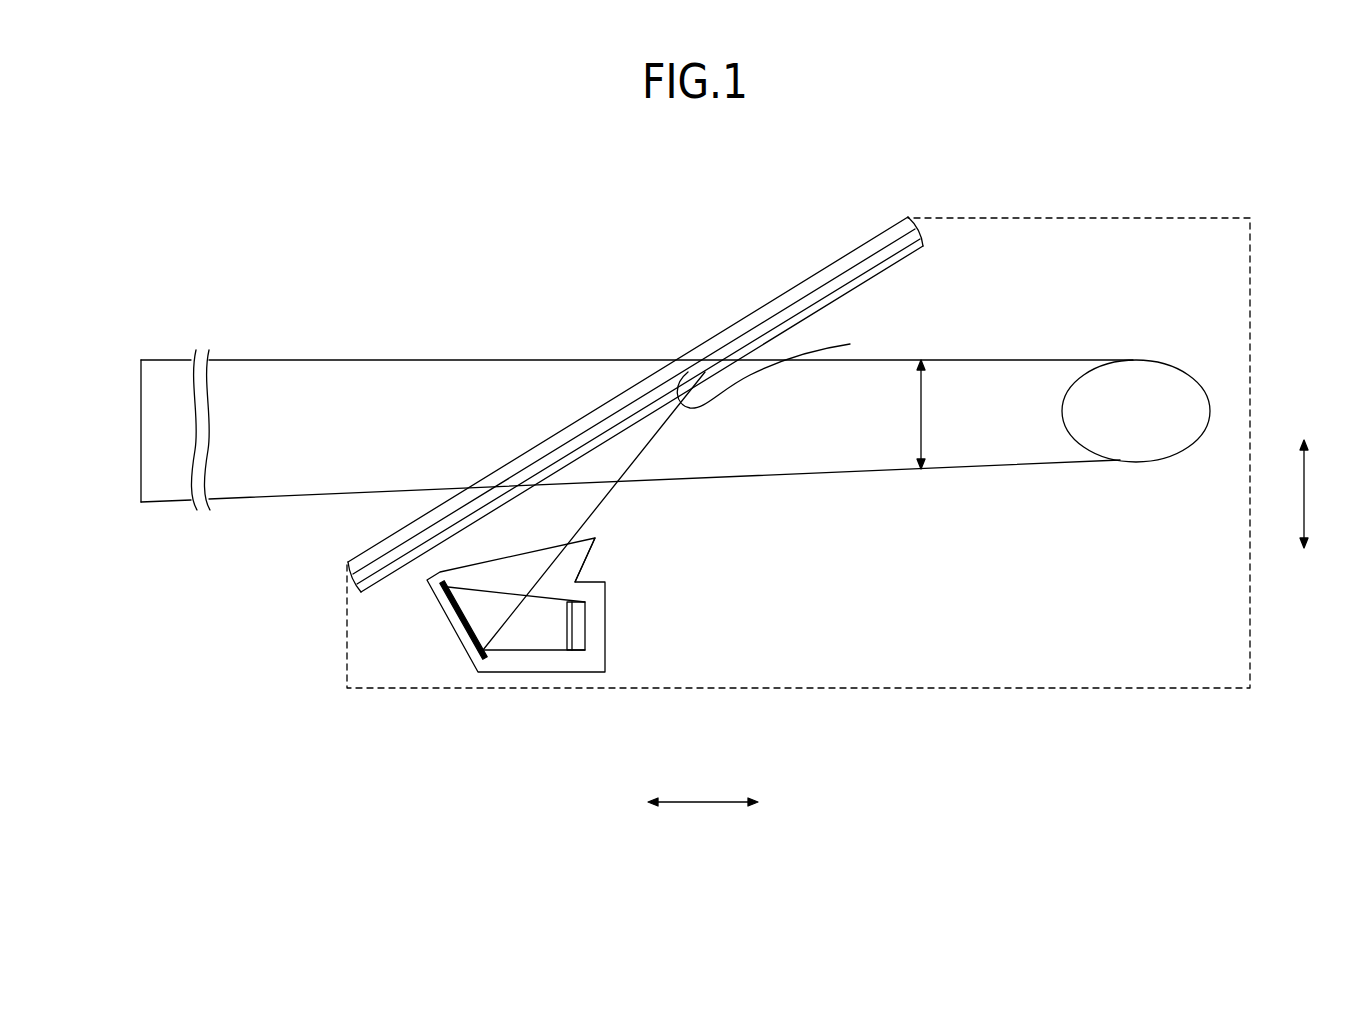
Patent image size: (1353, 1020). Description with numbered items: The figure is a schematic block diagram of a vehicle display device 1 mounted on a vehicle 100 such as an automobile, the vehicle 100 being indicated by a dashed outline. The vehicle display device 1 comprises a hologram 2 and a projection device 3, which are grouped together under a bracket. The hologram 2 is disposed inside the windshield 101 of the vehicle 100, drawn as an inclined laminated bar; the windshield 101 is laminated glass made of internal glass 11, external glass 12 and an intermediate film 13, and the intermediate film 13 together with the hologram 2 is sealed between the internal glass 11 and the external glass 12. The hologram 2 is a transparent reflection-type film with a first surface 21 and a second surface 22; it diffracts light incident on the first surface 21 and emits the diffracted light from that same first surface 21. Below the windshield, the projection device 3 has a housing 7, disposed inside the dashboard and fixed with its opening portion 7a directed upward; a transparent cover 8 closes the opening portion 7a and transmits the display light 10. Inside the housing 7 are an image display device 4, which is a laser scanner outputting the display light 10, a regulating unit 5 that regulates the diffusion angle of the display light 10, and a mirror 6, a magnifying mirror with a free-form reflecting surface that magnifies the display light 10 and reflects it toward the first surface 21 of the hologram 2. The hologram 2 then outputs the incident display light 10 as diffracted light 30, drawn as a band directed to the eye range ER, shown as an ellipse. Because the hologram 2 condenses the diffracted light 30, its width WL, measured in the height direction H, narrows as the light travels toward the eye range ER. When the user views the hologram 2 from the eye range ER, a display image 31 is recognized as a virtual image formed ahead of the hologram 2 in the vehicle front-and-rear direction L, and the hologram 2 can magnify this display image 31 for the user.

The vehicle display device 1 is at (587, 305).
The hologram 2 is at (639, 383).
The projection device 3 is at (560, 521).
The image display device 4 is at (577, 637).
The regulating unit 5 is at (567, 650).
The mirror 6 is at (468, 635).
The housing 7 is at (560, 636).
The opening portion 7a is at (595, 539).
The cover 8 is at (580, 564).
The display light 10 is at (618, 500).
The internal glass 11 is at (893, 263).
The external glass 12 is at (889, 240).
The intermediate film 13 is at (851, 262).
The first surface 21 is at (779, 368).
The second surface 22 is at (617, 415).
The diffracted light 30 is at (641, 400).
The display image 31 is at (141, 419).
The vehicle 100 is at (1195, 218).
The windshield 101 is at (639, 383).
The eye range ER is at (1146, 378).
The width WL is at (940, 414).
The height direction H is at (1314, 494).
The vehicle front-and-rear direction L is at (703, 790).